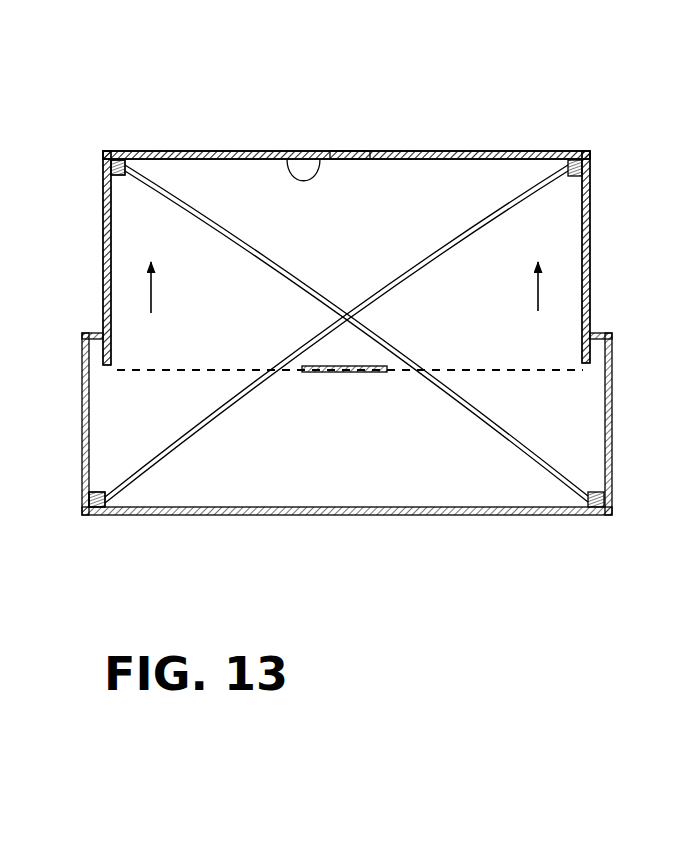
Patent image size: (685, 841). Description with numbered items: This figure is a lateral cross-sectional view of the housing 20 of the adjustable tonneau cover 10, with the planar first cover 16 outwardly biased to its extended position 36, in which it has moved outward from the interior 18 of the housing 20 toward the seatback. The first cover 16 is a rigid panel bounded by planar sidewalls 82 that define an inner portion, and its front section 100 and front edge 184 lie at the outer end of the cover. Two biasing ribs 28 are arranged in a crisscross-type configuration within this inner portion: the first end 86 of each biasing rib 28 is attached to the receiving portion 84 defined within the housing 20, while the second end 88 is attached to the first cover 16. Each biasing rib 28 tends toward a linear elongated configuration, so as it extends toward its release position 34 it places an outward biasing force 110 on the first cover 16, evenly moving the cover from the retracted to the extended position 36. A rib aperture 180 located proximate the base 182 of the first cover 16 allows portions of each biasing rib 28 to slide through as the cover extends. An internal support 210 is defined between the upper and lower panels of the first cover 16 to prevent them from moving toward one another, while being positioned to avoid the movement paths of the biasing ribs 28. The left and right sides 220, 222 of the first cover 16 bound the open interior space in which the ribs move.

The adjustable tonneau cover 10 is at (240, 109).
The first cover 16 is at (469, 136).
The interior 18 is at (459, 492).
The housing 20 is at (611, 474).
The biasing rib 28 is at (214, 222).
The release position 34 is at (412, 264).
The extended position 36 is at (217, 149).
The sidewall 82 is at (104, 170).
The receiving portion 84 is at (82, 508).
The first end 86 is at (147, 477).
The second end 88 is at (146, 152).
The front section 100 is at (315, 151).
The outward biasing force 110 is at (153, 280).
The rib aperture 180 is at (512, 374).
The base 182 is at (155, 373).
The front edge 184 is at (351, 151).
The internal support 210 is at (345, 372).
The left side 220 is at (101, 203).
The right side 222 is at (598, 245).